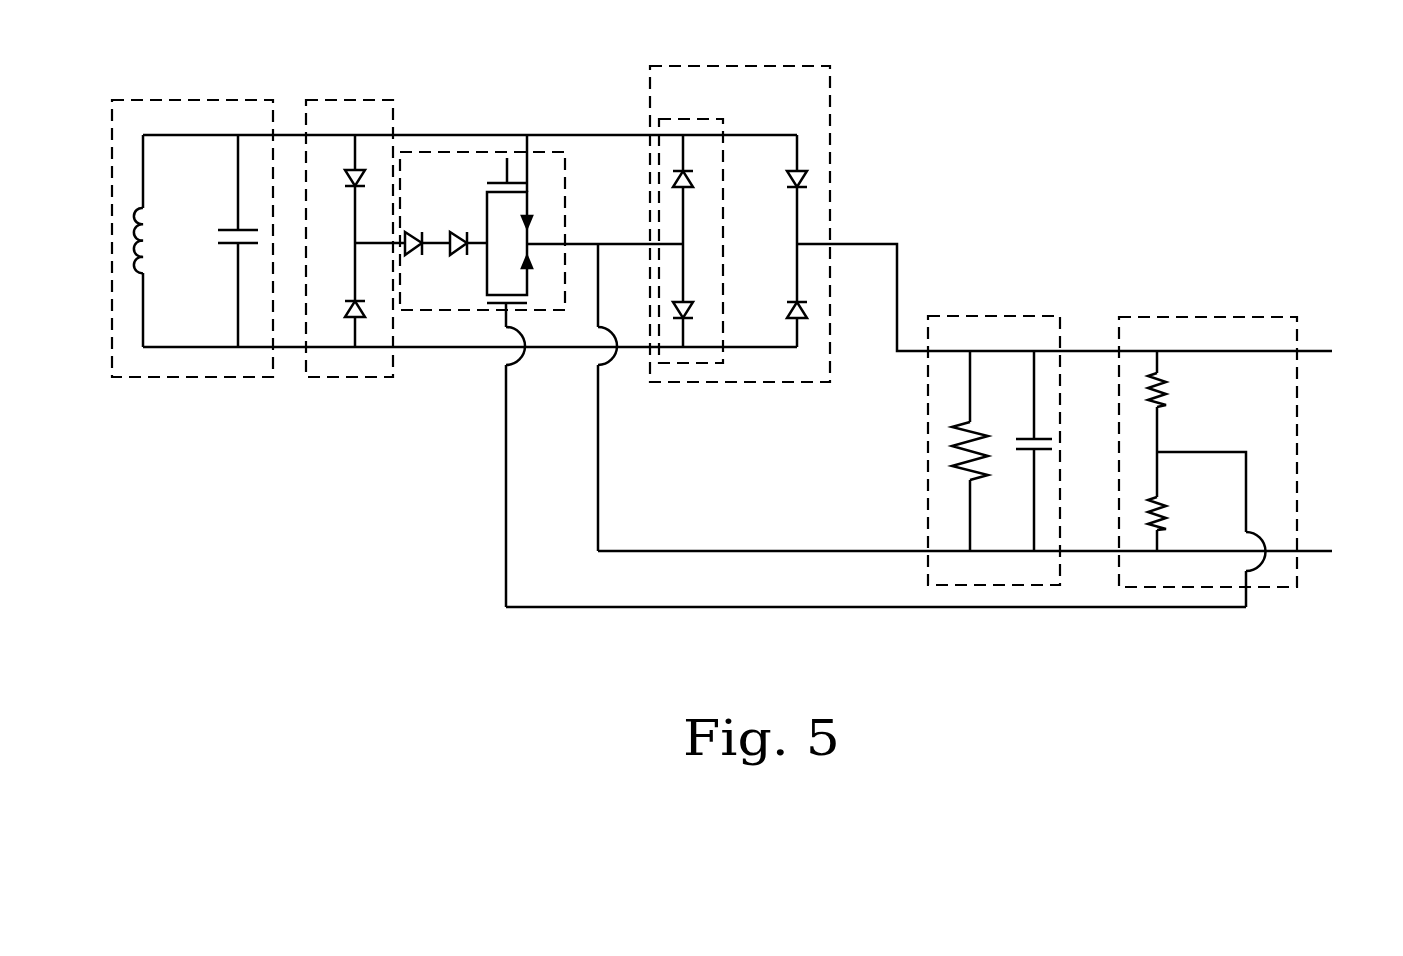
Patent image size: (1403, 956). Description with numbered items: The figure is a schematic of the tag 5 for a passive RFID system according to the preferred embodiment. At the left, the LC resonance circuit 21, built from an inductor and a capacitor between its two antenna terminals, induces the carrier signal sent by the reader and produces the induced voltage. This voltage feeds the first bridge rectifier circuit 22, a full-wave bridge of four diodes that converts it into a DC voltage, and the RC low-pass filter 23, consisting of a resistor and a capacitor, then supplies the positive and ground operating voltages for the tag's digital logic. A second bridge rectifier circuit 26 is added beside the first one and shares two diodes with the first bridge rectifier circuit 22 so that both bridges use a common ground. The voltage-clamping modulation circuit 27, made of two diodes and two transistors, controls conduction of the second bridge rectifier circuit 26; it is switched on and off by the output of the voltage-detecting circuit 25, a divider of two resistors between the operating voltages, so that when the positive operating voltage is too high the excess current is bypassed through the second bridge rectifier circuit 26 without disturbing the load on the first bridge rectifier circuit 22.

The tag 5 is at (1128, 135).
The LC resonance circuit 21 is at (232, 118).
The second bridge rectifier circuit 26 is at (682, 128).
The voltage-clamping modulation circuit 27 is at (418, 160).
The first bridge rectifier circuit 22 is at (762, 82).
The RC low-pass filter 23 is at (985, 330).
The voltage-detecting circuit 25 is at (1167, 330).